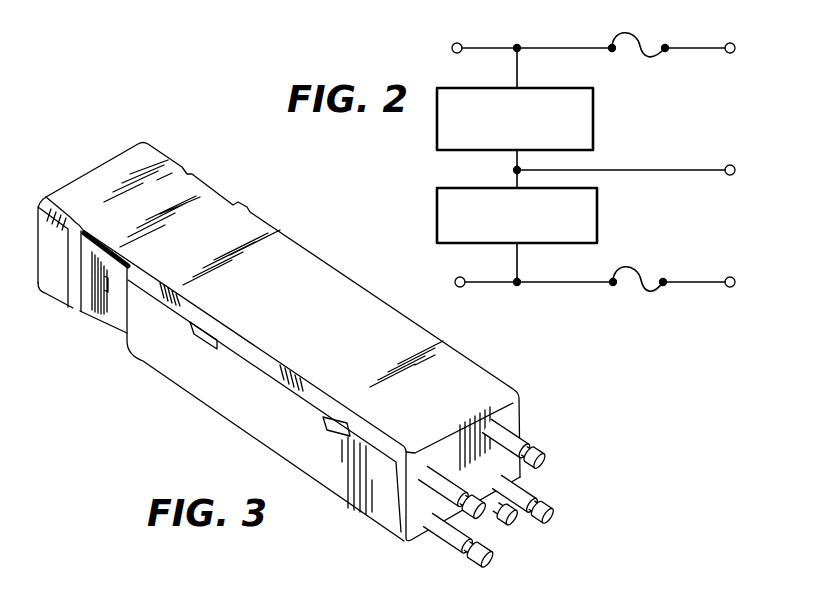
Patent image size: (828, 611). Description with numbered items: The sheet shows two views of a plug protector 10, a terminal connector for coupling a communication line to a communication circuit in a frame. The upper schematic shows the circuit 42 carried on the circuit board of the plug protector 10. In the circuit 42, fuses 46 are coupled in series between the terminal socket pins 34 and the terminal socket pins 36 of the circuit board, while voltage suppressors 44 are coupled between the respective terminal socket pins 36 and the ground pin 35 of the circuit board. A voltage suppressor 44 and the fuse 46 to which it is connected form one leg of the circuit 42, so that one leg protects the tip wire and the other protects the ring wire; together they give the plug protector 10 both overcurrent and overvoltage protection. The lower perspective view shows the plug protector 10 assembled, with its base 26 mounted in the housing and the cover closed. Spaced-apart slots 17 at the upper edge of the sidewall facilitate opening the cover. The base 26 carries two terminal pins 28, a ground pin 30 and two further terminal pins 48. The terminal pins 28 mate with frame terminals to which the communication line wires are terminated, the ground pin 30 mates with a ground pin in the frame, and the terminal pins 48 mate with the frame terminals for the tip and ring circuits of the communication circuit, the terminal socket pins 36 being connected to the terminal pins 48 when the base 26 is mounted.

In FIG. 3, the plug protector 10 is at (178, 416).
In FIG. 3, the slots 17 is at (198, 342).
In FIG. 3, the base 26 is at (503, 392).
In FIG. 3, the terminal pins 28 is at (508, 432).
In FIG. 3, the ground pin 30 is at (511, 524).
In FIG. 3, the terminal pins 48 is at (548, 505).
In FIG. 2, the terminal socket pins 34 is at (728, 54).
In FIG. 2, the ground pin 35 is at (727, 176).
In FIG. 2, the terminal socket pins 36 is at (462, 54).
In FIG. 2, the circuit 42 is at (545, 300).
In FIG. 2, the voltage suppressors 44 is at (593, 143).
In FIG. 2, the fuses 46 is at (650, 62).